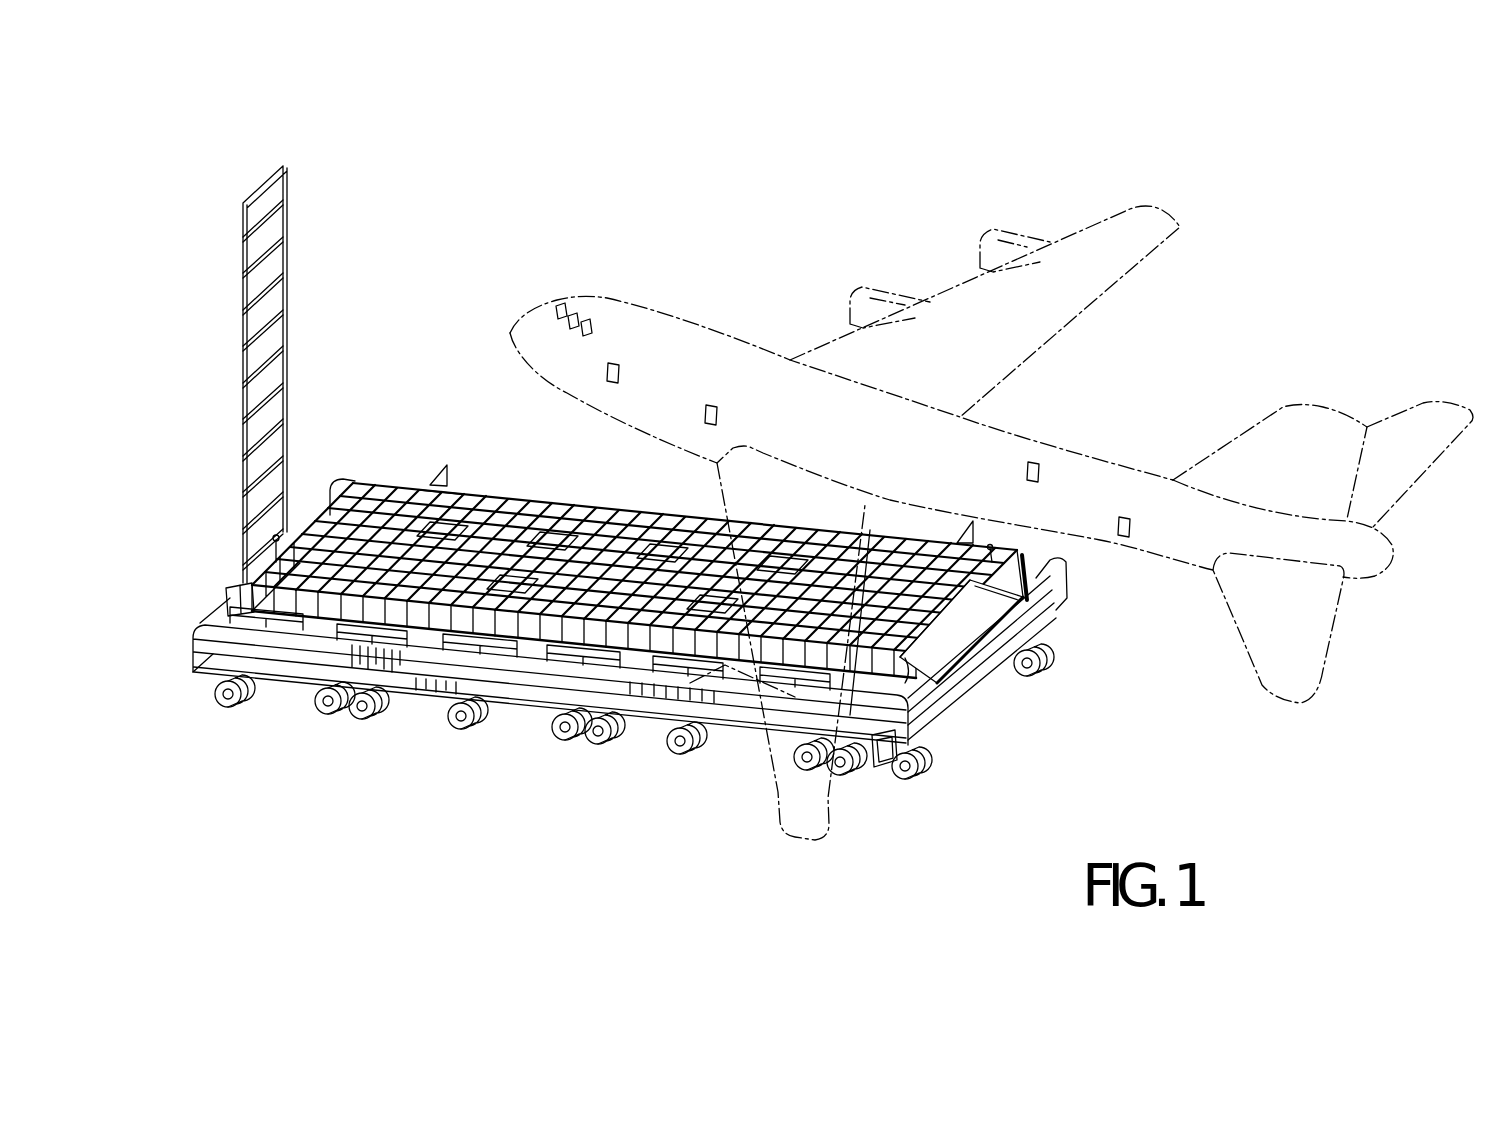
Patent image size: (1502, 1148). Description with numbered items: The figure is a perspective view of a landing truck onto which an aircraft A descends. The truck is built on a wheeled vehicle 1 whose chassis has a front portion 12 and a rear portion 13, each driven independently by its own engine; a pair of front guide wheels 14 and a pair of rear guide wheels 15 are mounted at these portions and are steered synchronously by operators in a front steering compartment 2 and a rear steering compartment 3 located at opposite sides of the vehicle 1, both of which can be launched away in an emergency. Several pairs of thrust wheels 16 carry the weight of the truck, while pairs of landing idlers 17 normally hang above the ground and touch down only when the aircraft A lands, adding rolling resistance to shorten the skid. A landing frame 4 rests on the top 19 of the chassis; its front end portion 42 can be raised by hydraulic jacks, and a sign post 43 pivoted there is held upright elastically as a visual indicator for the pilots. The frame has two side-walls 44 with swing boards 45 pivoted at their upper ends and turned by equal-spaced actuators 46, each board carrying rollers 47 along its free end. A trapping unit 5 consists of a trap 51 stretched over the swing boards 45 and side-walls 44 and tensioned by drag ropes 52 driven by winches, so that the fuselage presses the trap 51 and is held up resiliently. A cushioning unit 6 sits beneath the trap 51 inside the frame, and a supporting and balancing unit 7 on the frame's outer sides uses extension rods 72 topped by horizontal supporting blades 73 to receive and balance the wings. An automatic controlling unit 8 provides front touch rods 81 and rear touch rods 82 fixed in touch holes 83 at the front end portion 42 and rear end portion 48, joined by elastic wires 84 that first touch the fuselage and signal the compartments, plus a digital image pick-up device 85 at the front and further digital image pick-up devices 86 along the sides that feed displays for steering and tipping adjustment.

The wheeled vehicle 1 is at (932, 816).
The front steering compartment 2 is at (380, 471).
The rear steering compartment 3 is at (893, 771).
The landing frame 4 is at (1030, 583).
The trapping unit 5 is at (552, 484).
The cushioning unit 6 is at (573, 545).
The supporting and balancing unit 7 is at (221, 626).
The automatic controlling unit 8 is at (437, 462).
The front portion 12 is at (198, 672).
The rear portion 13 is at (953, 721).
The front guide wheels 14 is at (230, 708).
The rear guide wheels 15 is at (928, 770).
The thrust wheels 16 is at (462, 730).
The landing idlers 17 is at (366, 724).
The top 19 is at (1053, 627).
The front end portion 42 is at (330, 510).
The sign post 43 is at (290, 172).
The side-walls 44 is at (1027, 600).
The swing boards 45 is at (238, 590).
The actuators 46 is at (925, 665).
The rollers 47 is at (770, 520).
The rear end portion 48 is at (978, 660).
The trap 51 is at (883, 533).
The drag ropes 52 is at (270, 610).
The extension rods 72 is at (648, 664).
The supporting blade 73 is at (683, 670).
The front touch rods 81 is at (452, 480).
The rear touch rods 82 is at (992, 548).
The touch holes 83 is at (868, 730).
The elastic wire 84 is at (418, 453).
The digital image pick-up device 85 is at (274, 543).
The digital image pick-up devices 86 is at (603, 675).
The aircraft A is at (690, 322).